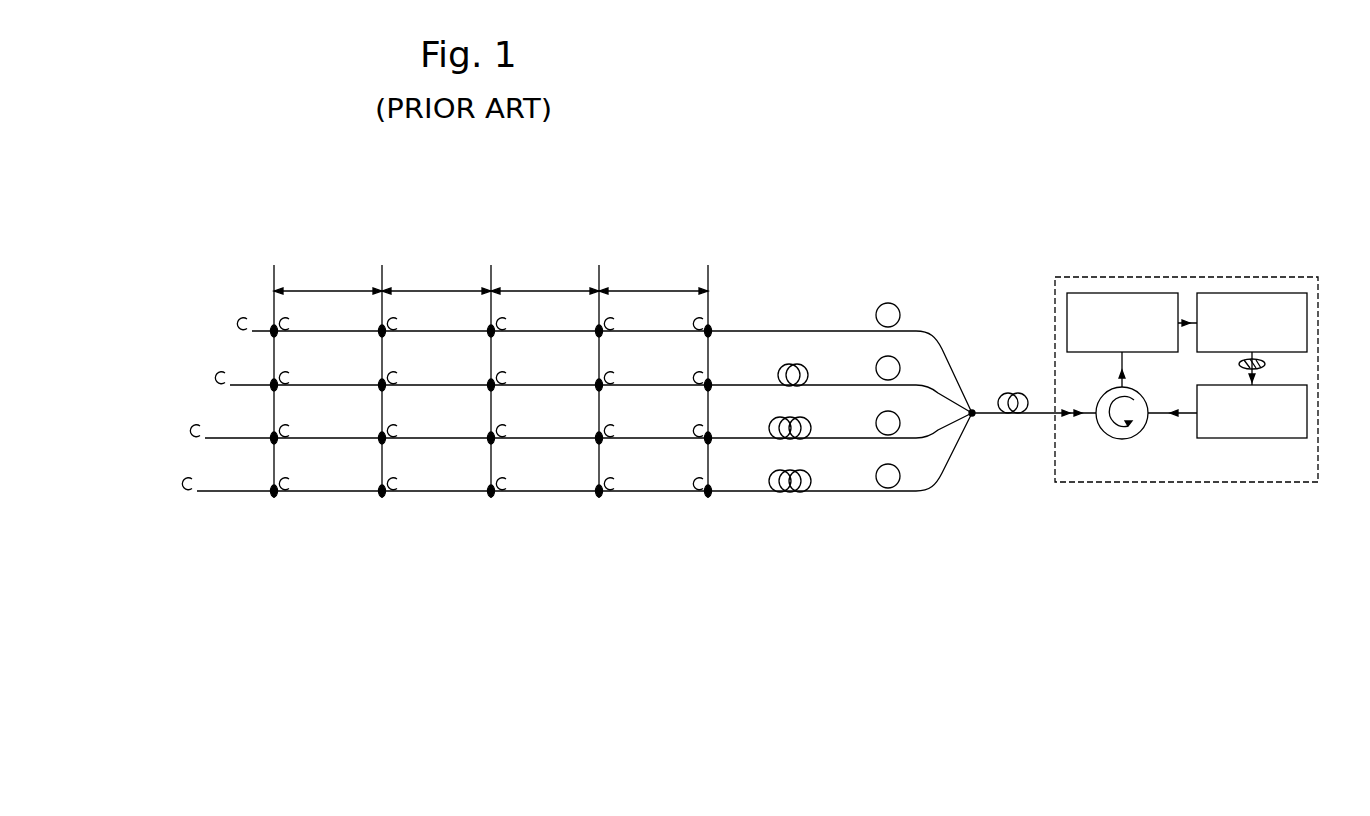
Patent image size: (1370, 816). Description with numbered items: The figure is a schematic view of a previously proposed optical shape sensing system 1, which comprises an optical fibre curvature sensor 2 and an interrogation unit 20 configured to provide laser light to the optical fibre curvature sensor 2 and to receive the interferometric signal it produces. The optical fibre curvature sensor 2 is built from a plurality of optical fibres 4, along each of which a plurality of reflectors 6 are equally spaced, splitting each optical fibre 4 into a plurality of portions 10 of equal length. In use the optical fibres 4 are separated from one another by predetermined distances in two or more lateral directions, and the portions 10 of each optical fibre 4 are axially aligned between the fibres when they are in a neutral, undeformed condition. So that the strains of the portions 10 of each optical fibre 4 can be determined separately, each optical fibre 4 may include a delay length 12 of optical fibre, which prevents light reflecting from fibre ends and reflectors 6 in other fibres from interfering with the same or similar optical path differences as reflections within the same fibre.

The optical shape sensing system 1 is at (989, 112).
The optical fibre curvature sensor 2 is at (792, 153).
The optical fibre 4 is at (767, 330).
The reflector 6 is at (272, 328).
The portion 10 is at (348, 291).
The delay length 12 is at (812, 331).
The interrogation unit 20 is at (1171, 277).